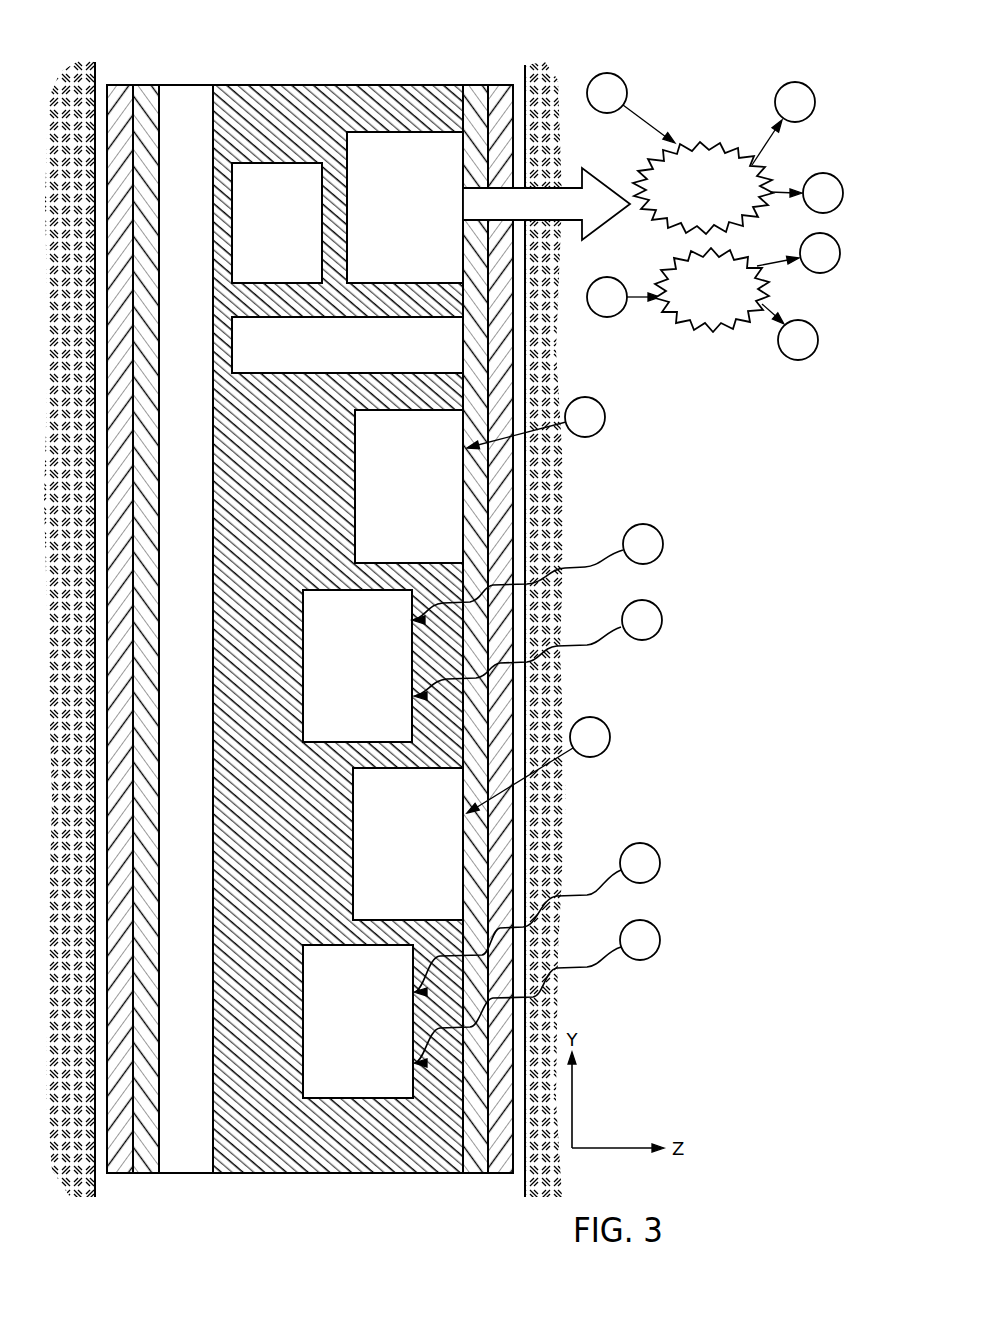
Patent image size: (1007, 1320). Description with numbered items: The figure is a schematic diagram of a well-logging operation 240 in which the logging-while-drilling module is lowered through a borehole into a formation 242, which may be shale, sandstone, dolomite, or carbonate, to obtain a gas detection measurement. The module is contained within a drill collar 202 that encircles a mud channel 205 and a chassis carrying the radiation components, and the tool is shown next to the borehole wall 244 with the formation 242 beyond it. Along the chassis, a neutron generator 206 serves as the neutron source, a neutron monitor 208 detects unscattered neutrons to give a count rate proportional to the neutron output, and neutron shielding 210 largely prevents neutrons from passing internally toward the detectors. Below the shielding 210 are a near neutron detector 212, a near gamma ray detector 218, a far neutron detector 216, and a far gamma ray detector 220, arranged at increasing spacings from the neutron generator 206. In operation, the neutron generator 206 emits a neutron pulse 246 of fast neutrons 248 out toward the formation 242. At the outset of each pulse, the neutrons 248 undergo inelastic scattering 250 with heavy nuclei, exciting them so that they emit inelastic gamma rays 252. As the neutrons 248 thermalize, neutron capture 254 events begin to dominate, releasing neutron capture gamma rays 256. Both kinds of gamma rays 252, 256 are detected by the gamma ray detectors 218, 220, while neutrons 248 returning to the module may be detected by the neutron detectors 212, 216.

The well-logging operation 240 is at (182, 27).
The drill collar 202 is at (118, 90).
The mud channel 205 is at (188, 90).
The borehole wall 244 is at (525, 66).
The formation 242 is at (737, 420).
The neutron generator 206 is at (389, 176).
The neutron monitor 208 is at (261, 197).
The neutron shielding 210 is at (276, 356).
The near neutron detector 212 is at (393, 447).
The far neutron detector 216 is at (392, 805).
The near gamma ray detector 218 is at (341, 624).
The far gamma ray detector 220 is at (342, 981).
The neutron pulse 246 is at (590, 172).
The neutrons 248 is at (612, 74).
The inelastic scattering 250 is at (710, 152).
The inelastic gamma rays 252 is at (790, 83).
The neutron capture 254 is at (700, 322).
The neutron capture gamma rays 256 is at (827, 272).